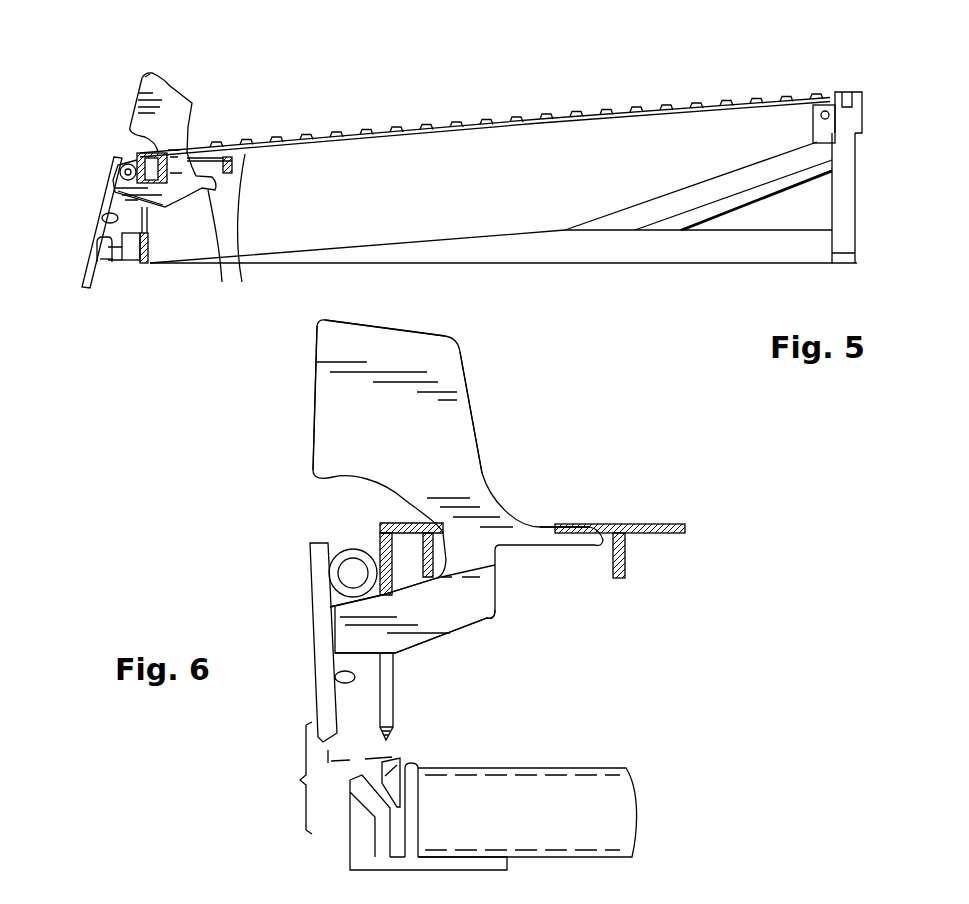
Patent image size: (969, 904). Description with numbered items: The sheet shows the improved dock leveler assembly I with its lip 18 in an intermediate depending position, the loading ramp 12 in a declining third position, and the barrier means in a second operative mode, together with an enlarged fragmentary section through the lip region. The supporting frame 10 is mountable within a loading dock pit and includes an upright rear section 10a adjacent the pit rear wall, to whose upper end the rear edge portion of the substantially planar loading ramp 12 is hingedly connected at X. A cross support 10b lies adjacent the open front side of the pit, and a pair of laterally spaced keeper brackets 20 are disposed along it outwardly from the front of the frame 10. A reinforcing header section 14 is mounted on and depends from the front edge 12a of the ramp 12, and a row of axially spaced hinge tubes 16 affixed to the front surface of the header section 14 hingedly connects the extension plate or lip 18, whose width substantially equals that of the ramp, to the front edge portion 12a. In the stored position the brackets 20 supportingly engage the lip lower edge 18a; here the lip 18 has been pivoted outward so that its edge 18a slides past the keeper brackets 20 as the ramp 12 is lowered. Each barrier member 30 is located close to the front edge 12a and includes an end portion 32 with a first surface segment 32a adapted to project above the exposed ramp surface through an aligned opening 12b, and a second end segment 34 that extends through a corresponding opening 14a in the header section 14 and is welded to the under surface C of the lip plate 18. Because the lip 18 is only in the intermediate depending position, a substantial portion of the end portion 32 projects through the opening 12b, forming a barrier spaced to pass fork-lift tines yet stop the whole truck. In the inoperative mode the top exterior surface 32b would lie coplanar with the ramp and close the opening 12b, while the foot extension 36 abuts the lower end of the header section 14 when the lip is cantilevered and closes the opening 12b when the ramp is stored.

In FIG. 5, the supporting frame 10 is at (622, 250).
In FIG. 6, the supporting frame 10 is at (628, 758).
In FIG. 5, the upright rear section 10a is at (843, 250).
In FIG. 6, the cross support 10b is at (413, 805).
In FIG. 5, the loading ramp 12 is at (607, 100).
In FIG. 6, the loading ramp 12 is at (695, 537).
In FIG. 5, the front edge of the ramp 12a is at (137, 152).
In FIG. 6, the front edge of the ramp 12a is at (383, 523).
In FIG. 5, the ramp opening 12b is at (207, 148).
In FIG. 6, the ramp opening 12b is at (605, 522).
In FIG. 5, the reinforcing header section 14 is at (163, 253).
In FIG. 5, the header section opening 14a is at (150, 216).
In FIG. 6, the header section opening 14a is at (387, 709).
In FIG. 6, the hinge tubes 16 is at (352, 549).
In FIG. 5, the lip 18 is at (100, 243).
In FIG. 6, the lip 18 is at (300, 602).
In FIG. 5, the lip lower edge 18a is at (92, 274).
In FIG. 6, the lip lower edge 18a is at (392, 770).
In FIG. 5, the keeper brackets 20 is at (99, 265).
In FIG. 6, the keeper brackets 20 is at (360, 848).
In FIG. 5, the barrier member 30 is at (204, 106).
In FIG. 6, the barrier member 30 is at (445, 385).
In FIG. 5, the end portion 32 is at (158, 76).
In FIG. 6, the end portion 32 is at (430, 352).
In FIG. 6, the first surface segment 32a is at (483, 473).
In FIG. 6, the top exterior surface 32b is at (315, 393).
In FIG. 5, the second end segment 34 is at (117, 192).
In FIG. 6, the second end segment 34 is at (385, 633).
In FIG. 5, the foot extension 36 is at (236, 270).
In FIG. 6, the foot extension 36 is at (578, 530).
In FIG. 5, the under surface of the lip plate C is at (108, 218).
In FIG. 6, the under surface of the lip plate C is at (345, 682).
In FIG. 5, the dock leveler assembly I is at (558, 106).
In FIG. 5, the hinge connection X is at (830, 92).